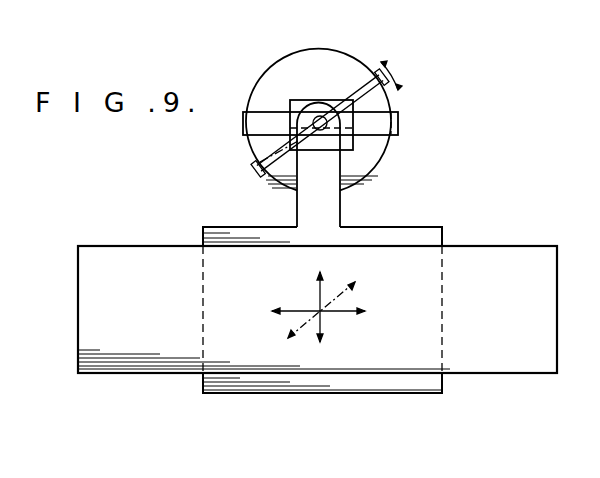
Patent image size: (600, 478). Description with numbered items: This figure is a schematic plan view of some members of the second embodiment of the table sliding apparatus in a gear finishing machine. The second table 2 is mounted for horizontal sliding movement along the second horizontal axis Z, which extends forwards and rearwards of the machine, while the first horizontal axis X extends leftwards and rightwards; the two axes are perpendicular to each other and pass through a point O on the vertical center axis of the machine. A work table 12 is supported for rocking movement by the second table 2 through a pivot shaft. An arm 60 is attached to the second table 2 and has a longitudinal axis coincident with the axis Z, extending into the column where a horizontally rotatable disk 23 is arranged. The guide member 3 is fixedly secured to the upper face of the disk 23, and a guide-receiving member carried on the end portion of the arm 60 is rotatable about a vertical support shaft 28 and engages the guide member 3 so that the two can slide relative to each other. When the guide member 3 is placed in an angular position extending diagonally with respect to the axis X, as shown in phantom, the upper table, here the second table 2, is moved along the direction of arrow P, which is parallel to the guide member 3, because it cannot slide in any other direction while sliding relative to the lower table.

The second sliding table 2 is at (420, 382).
The guide member 3 is at (258, 165).
The work table 12 is at (518, 342).
The horizontally rotatable disk 23 is at (312, 74).
The vertical support shaft 28 is at (327, 117).
The arm 60 is at (327, 211).
The first horizontal axis X is at (293, 312).
The point on vertical center axis O is at (325, 316).
The second horizontal axis Z is at (323, 288).
The direction arrow P is at (300, 330).